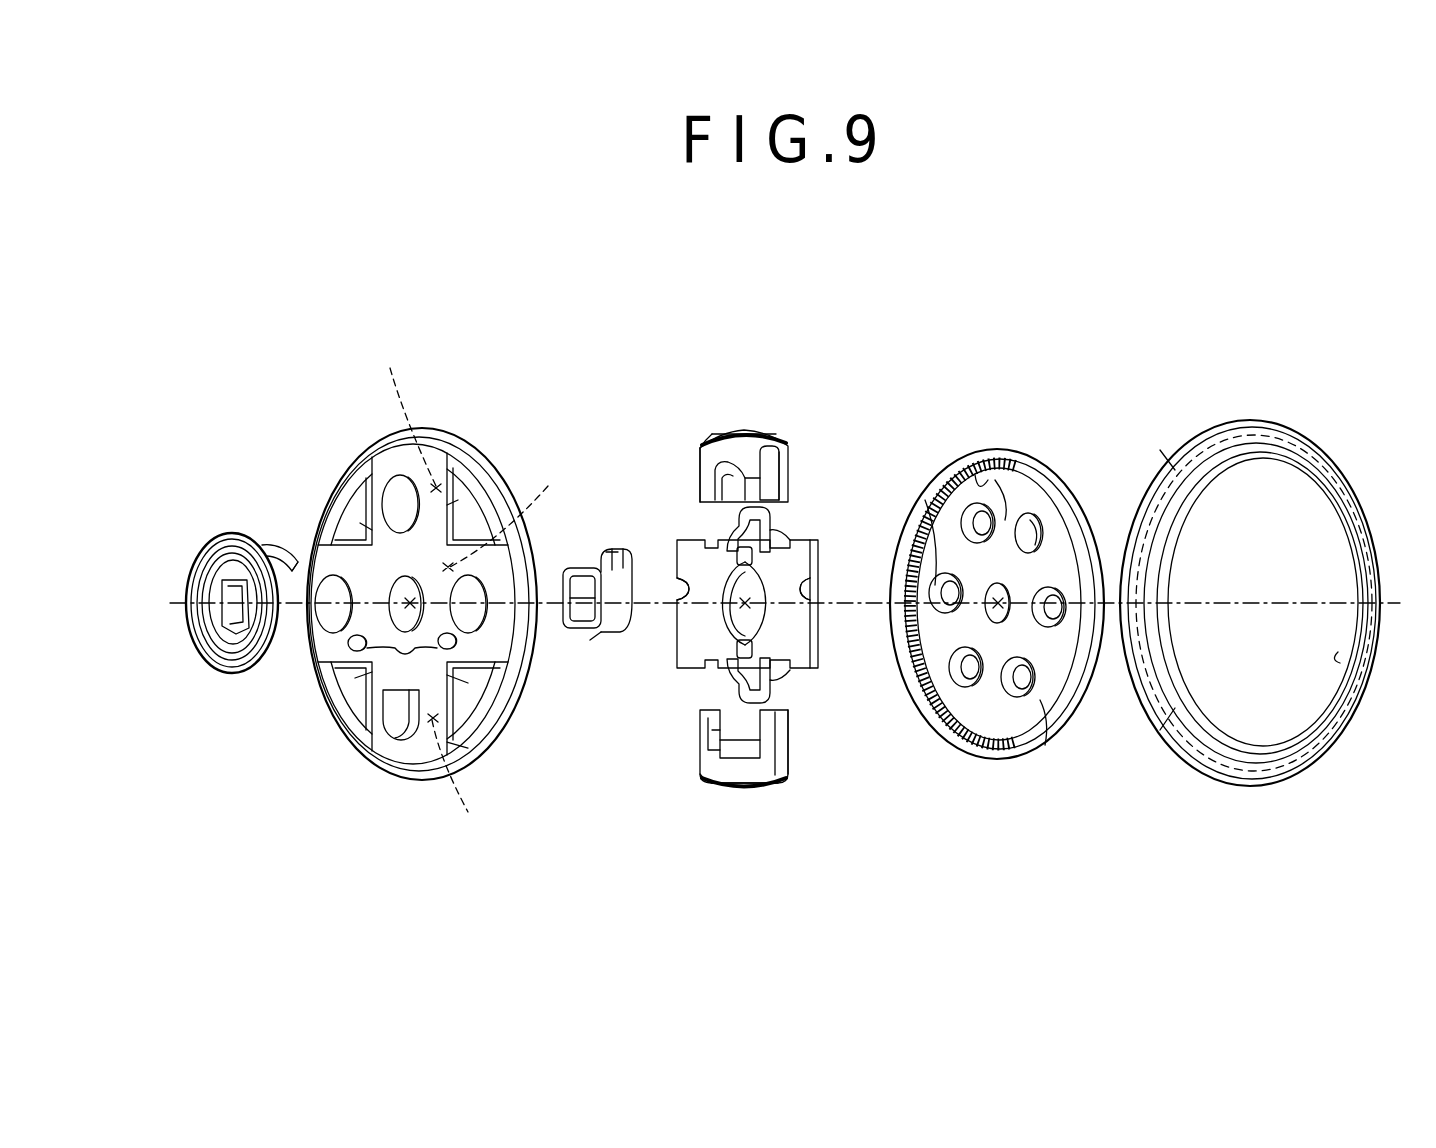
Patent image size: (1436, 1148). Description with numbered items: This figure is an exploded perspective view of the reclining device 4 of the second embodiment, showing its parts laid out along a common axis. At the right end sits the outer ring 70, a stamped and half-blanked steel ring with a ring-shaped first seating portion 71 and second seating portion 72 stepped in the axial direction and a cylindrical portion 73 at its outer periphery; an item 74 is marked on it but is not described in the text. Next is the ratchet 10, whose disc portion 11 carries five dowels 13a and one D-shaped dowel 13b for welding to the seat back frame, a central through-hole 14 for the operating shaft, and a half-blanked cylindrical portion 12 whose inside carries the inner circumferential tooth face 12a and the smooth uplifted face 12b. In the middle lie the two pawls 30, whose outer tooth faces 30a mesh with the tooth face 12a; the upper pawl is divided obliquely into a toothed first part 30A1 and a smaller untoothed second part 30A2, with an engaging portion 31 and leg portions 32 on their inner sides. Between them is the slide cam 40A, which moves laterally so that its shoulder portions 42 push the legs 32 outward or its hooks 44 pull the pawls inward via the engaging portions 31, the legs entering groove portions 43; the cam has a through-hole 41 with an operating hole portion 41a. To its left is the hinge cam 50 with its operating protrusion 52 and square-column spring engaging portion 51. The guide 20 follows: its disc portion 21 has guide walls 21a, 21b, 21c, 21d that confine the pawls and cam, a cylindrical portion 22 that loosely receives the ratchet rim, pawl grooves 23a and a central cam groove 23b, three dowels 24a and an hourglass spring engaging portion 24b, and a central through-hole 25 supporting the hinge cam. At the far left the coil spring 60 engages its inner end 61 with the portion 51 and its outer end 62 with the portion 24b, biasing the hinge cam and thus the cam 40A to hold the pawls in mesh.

The reclining device 4 is at (1148, 286).
The ratchet 10 is at (1045, 470).
The disc portion 11 is at (1010, 495).
The cylindrical portion 12 is at (1040, 540).
The inner circumferential tooth face 12a is at (980, 480).
The uplifted face 12b is at (935, 505).
The dowel 13a is at (962, 527).
The D-shaped dowel 13b is at (1035, 530).
The through-hole 14 is at (1005, 592).
The guide 20 is at (460, 450).
The disc portion 21 is at (470, 523).
The guide wall 21a is at (360, 523).
The guide wall 21b is at (447, 505).
The guide wall 21c is at (355, 678).
The guide wall 21d is at (468, 683).
The cylindrical portion 22 is at (468, 748).
The pawl groove 23a is at (446, 593).
The cam groove 23b is at (562, 482).
The dowel 24a is at (400, 478).
The spring engaging portion 24b is at (368, 650).
The through-hole 25 is at (418, 588).
The pawl 30 is at (782, 422).
The outer tooth face 30a is at (750, 430).
The first part 30A1 is at (700, 470).
The second part 30A2 is at (780, 456).
The engaging portion 31 is at (712, 433).
The leg portion 32 is at (762, 477).
The slide cam 40A is at (806, 538).
The through-hole 41 is at (765, 645).
The operating hole portion 41a is at (752, 558).
The shoulder portion 42 is at (680, 588).
The groove portion 43 is at (772, 522).
The hook 44 is at (728, 520).
The hinge cam 50 is at (610, 636).
The spring engaging portion 51 is at (590, 640).
The operating protrusion 52 is at (612, 549).
The coil spring 60 is at (212, 533).
The inner end 61 is at (212, 654).
The outer end 62 is at (288, 557).
The outer ring 70 is at (1296, 432).
The first seating portion 71 is at (1225, 465).
The second seating portion 72 is at (1152, 572).
The cylindrical portion 73 is at (1350, 520).
The ring mark 74 is at (1170, 447).